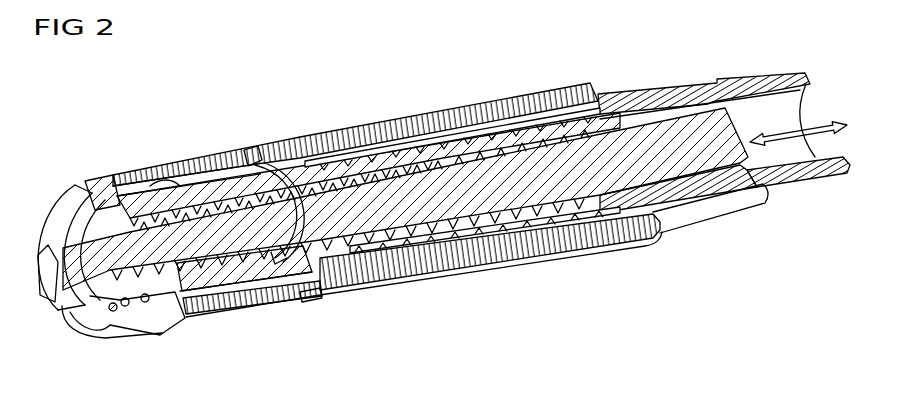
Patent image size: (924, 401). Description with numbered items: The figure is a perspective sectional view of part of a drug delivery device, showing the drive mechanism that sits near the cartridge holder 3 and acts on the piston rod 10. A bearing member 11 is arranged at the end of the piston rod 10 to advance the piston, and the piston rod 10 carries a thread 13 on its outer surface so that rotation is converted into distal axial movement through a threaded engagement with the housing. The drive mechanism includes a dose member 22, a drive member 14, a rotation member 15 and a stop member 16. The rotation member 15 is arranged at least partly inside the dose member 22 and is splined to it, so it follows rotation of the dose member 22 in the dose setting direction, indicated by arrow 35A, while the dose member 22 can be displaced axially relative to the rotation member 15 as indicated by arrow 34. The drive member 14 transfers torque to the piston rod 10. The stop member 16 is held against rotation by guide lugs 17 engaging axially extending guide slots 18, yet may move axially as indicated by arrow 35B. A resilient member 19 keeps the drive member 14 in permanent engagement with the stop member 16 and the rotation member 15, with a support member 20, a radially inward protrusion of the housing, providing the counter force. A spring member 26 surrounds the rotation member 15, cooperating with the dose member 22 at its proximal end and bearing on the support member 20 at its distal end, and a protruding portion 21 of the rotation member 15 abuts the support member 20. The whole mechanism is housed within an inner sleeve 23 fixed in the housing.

The cartridge holder 3 is at (372, 58).
The piston rod 10 is at (652, 125).
The bearing member 11 is at (45, 302).
The thread 13 is at (236, 296).
The drive member 14 is at (203, 178).
The rotation member 15 is at (410, 230).
The stop member 16 is at (165, 262).
The guide lug 17 is at (116, 178).
The guide slot 18 is at (58, 202).
The resilient member 19 is at (93, 316).
The support member 20 is at (281, 150).
The protruding portion 21 is at (250, 165).
The dose member 22 is at (762, 73).
The inner sleeve 23 is at (430, 300).
The spring member 26 is at (470, 136).
The arrow 34 is at (812, 126).
The arrow 35A is at (265, 228).
The arrow 35B is at (168, 186).